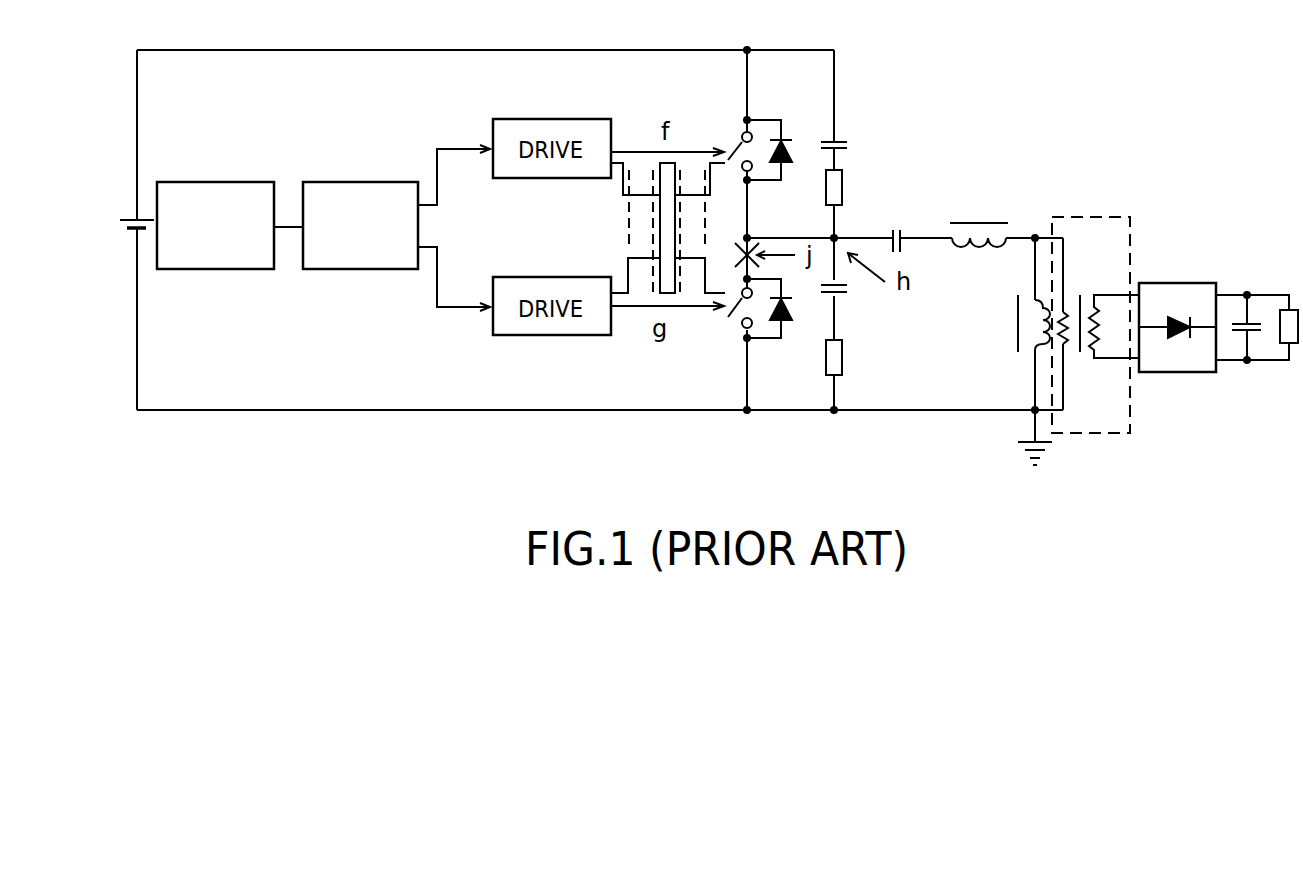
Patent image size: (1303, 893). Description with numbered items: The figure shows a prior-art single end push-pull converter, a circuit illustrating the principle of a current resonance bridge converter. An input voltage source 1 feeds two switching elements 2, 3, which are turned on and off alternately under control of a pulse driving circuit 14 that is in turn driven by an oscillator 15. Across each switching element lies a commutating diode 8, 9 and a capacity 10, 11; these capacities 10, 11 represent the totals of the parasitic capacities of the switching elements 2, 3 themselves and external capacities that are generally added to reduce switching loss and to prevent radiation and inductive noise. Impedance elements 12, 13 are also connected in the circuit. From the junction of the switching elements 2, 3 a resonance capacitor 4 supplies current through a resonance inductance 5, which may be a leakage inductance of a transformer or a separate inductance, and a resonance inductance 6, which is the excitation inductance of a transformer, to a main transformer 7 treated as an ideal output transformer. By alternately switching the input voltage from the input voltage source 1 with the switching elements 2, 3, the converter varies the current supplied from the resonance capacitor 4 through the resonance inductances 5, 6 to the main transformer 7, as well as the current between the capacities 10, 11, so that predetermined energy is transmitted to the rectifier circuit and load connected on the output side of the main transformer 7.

The input voltage source 1 is at (124, 216).
The switching element 2 is at (730, 148).
The switching element 3 is at (734, 316).
The resonance capacitor 4 is at (922, 231).
The resonance inductance 5 is at (978, 222).
The resonance inductance 6 is at (1018, 325).
The main transformer 7 is at (1125, 217).
The commutating diode 8 is at (791, 152).
The commutating diode 9 is at (789, 322).
The capacity at both ends of switching element 10 is at (846, 140).
The capacity at both ends of switching element 11 is at (840, 296).
The impedance element 12 is at (844, 185).
The impedance element 13 is at (843, 366).
The pulse driving circuit 14 is at (385, 181).
The oscillator 15 is at (244, 181).